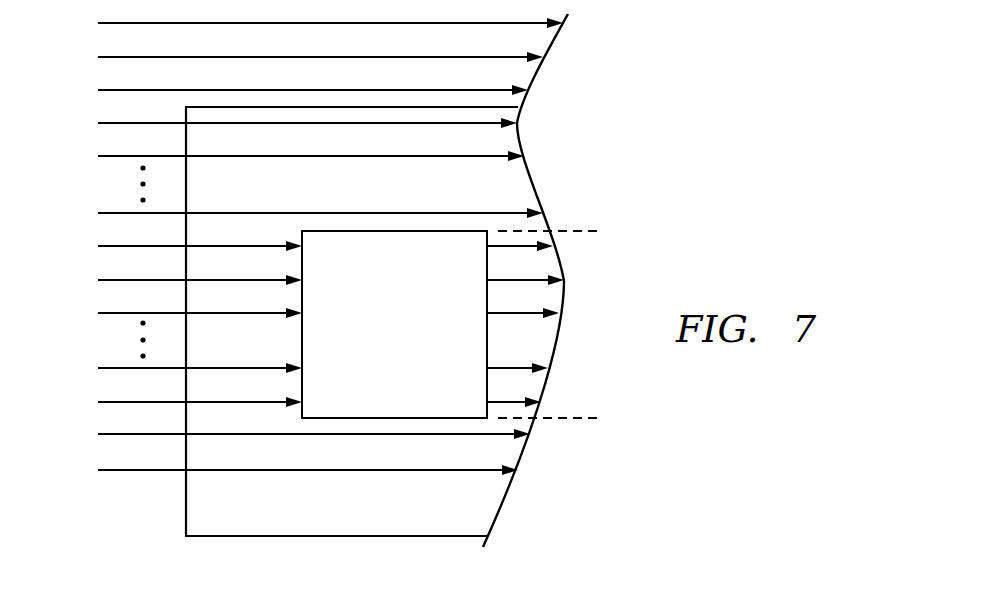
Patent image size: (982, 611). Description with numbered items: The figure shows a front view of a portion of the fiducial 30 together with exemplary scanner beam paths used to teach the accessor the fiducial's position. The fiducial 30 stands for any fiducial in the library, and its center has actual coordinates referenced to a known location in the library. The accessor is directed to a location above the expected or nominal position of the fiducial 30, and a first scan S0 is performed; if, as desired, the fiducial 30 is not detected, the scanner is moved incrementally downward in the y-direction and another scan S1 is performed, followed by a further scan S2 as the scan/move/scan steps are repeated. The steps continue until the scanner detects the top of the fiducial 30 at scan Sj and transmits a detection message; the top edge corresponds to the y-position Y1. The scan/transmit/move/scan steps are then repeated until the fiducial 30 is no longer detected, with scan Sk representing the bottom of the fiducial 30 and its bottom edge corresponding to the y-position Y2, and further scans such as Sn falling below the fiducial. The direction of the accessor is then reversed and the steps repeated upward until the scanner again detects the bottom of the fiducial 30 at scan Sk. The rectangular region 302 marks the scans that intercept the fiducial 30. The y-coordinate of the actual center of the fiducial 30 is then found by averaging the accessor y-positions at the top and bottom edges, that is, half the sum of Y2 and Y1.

The fiducial 30 is at (383, 517).
The logic sub-block 302 is at (377, 337).
The first scan S0 is at (315, 22).
The second scan S1 is at (305, 56).
The third scan S2 is at (298, 89).
The top-detecting scan Sj is at (188, 247).
The bottom-detecting scan Sk is at (187, 400).
The final scan Sn is at (295, 469).
The top edge y-position Y1 is at (568, 231).
The bottom edge y-position Y2 is at (568, 417).